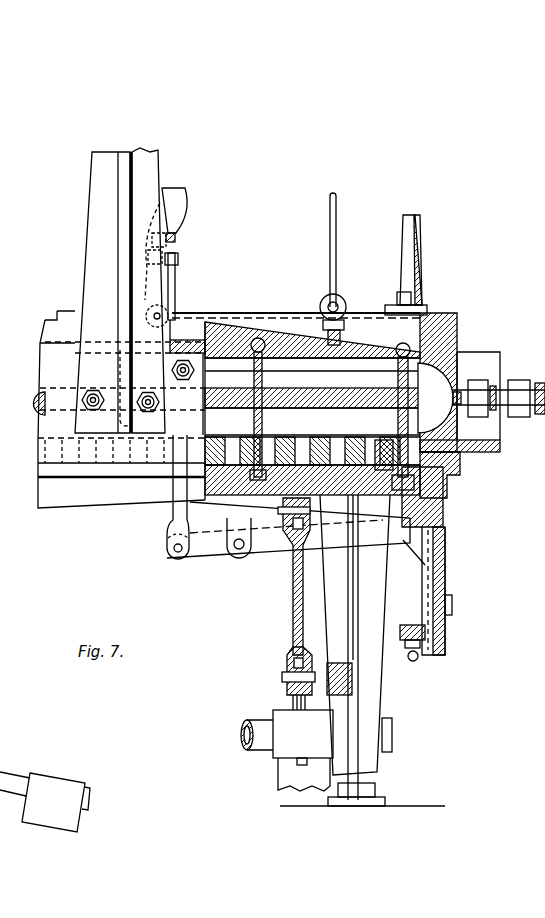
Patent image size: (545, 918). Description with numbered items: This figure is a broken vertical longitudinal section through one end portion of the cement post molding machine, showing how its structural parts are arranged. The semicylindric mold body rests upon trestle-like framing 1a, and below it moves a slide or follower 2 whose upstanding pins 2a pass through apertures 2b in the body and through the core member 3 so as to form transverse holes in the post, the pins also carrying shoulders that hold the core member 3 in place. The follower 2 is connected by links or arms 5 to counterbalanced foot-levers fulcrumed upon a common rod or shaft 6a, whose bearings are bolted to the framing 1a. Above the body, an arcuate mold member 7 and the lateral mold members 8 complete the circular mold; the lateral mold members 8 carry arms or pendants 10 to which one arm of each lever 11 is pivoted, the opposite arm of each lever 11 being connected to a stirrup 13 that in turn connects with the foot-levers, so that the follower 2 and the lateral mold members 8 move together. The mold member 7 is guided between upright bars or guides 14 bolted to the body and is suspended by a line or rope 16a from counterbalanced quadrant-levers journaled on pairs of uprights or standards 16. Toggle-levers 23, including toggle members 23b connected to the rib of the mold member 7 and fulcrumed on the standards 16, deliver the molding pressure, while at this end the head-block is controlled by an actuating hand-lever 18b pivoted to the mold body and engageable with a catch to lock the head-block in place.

The trestle-like framing 1a is at (330, 600).
The slide or follower 2 is at (78, 490).
The upstanding pins 2a is at (255, 378).
The apertures 2b is at (266, 424).
The core member 3 is at (33, 404).
The links or arms 5 is at (289, 617).
The rod or shaft 6a is at (250, 724).
The mold member 7 is at (296, 304).
The lateral mold members 8 is at (290, 335).
The arms or pendants 10 is at (176, 490).
The levers 11 is at (288, 530).
The stirrup 13 is at (433, 594).
The upright bars or guides 14 is at (408, 265).
The uprights or standards 16 is at (83, 290).
The line or rope 16a is at (321, 269).
The actuating hand-lever 18b is at (498, 394).
The toggle-levers 23 is at (176, 230).
The toggle members 23b is at (178, 283).